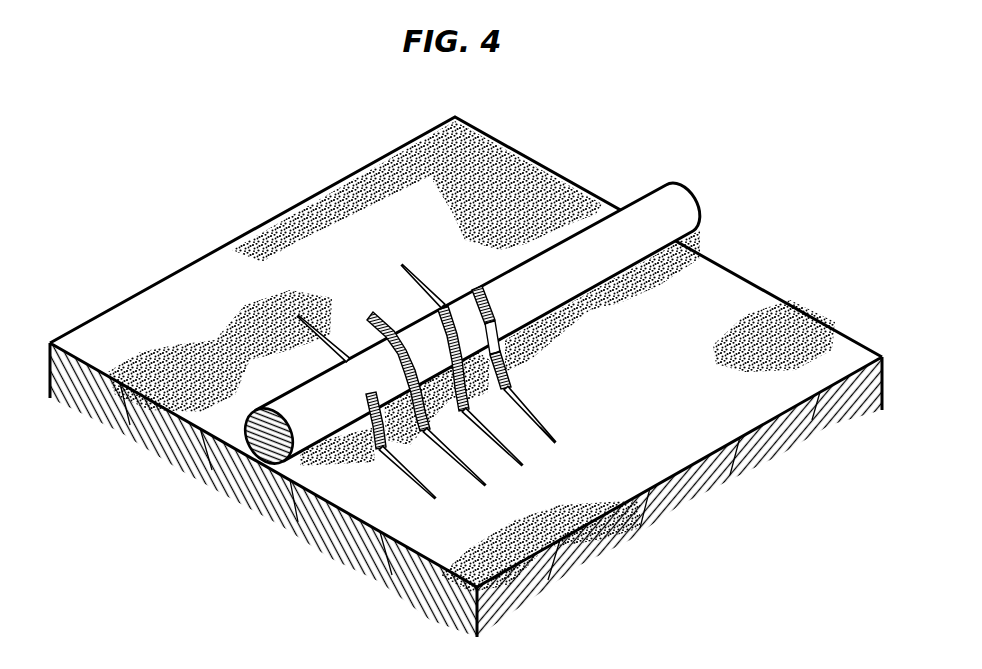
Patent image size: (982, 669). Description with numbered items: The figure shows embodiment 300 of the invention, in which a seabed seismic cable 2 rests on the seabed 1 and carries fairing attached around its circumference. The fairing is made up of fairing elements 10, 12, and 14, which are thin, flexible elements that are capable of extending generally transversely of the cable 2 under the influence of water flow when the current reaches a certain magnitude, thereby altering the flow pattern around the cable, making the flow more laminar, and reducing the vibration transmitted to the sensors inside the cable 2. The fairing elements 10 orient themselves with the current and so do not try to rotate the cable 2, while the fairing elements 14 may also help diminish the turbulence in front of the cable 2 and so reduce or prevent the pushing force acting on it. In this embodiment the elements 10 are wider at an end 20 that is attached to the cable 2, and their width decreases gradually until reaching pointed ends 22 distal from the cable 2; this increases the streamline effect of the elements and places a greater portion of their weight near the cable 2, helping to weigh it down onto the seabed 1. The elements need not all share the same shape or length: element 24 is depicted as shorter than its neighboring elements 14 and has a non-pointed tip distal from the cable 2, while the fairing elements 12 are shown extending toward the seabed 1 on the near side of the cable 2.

The embodiment 300 is at (300, 257).
The ground 1 is at (782, 327).
The cable 2 is at (657, 195).
The fairing elements 10 is at (535, 413).
The fairing elements 12 is at (432, 500).
The fairing elements 14 is at (303, 326).
The end 20 is at (477, 287).
The pointed ends 22 is at (556, 442).
The element 24 is at (368, 312).